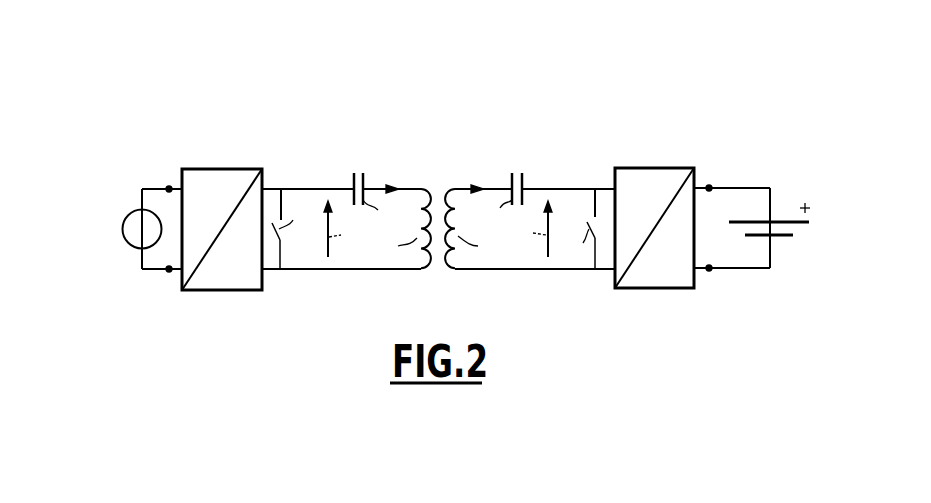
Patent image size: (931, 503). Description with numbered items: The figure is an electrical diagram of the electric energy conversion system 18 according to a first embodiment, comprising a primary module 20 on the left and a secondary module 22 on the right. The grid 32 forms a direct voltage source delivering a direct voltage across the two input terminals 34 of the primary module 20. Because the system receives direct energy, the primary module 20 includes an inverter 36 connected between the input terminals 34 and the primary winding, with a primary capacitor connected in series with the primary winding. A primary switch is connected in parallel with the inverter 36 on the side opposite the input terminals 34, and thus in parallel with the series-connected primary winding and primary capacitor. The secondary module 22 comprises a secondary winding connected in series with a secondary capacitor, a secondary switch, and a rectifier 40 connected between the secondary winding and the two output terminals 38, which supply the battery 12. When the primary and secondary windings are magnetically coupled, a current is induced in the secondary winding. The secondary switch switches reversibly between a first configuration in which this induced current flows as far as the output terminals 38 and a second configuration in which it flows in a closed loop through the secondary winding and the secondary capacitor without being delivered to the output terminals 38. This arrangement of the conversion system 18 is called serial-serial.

The battery 12 is at (783, 238).
The conversion system 18 is at (543, 119).
The primary module 20 is at (420, 152).
The secondary module 22 is at (577, 158).
The grid 32 is at (124, 249).
The input terminals 34 is at (169, 188).
The inverter 36 is at (228, 168).
The output terminals 38 is at (709, 187).
The rectifier 40 is at (657, 167).